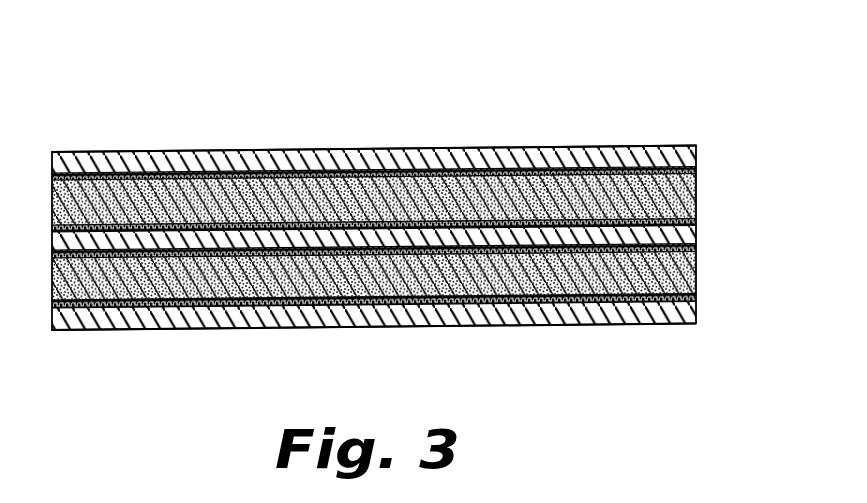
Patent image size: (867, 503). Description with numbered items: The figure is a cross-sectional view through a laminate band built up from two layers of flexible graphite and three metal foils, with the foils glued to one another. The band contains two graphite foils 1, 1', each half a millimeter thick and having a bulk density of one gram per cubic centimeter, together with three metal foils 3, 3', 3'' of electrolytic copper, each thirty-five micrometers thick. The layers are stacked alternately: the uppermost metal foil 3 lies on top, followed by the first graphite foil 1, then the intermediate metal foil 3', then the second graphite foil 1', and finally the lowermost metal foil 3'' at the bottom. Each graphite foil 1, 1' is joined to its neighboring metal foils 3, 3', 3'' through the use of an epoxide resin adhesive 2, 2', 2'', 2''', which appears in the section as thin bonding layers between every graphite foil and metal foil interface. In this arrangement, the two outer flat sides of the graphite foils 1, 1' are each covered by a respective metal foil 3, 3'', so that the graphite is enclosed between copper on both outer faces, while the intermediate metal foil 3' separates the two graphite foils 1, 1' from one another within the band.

The metal foil 3 is at (374, 129).
The epoxide resin adhesive 2 is at (405, 160).
The graphite foil 1 is at (406, 195).
The epoxide resin adhesive 2' is at (405, 216).
The metal foil 3' is at (406, 246).
The epoxide resin adhesive 2'' is at (408, 268).
The graphite foil 1' is at (406, 288).
The epoxide resin adhesive 2''' is at (411, 326).
The metal foil 3'' is at (374, 347).